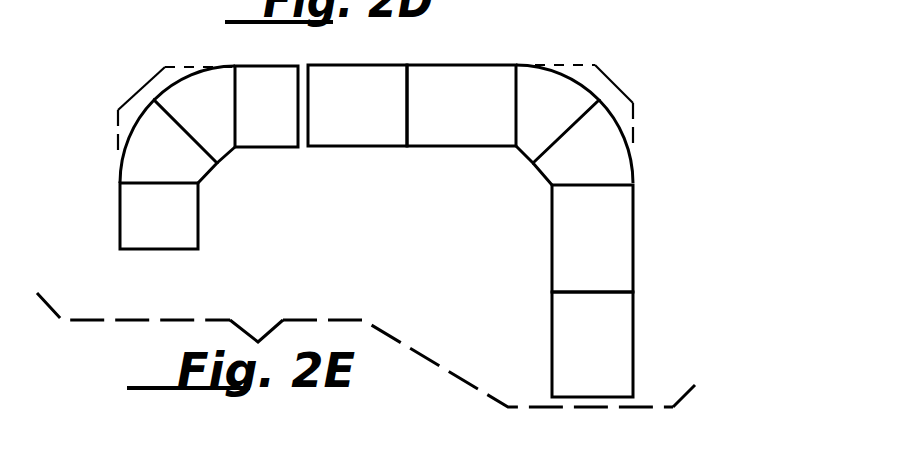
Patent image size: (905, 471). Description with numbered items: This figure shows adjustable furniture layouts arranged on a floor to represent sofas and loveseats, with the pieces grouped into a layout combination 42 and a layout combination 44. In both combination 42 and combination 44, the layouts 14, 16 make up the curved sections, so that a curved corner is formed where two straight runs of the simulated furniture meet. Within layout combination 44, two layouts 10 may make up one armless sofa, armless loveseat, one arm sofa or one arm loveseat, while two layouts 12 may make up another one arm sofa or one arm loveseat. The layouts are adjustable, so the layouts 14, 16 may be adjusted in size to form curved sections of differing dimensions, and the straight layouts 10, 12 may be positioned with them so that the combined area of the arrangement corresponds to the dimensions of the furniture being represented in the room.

The adjustable layout 10 is at (127, 228).
The adjustable layout 12 is at (267, 142).
The adjustable layout 14 is at (134, 144).
The adjustable layout 16 is at (180, 93).
The layout combination 42 is at (247, 58).
The layout combination 44 is at (465, 58).